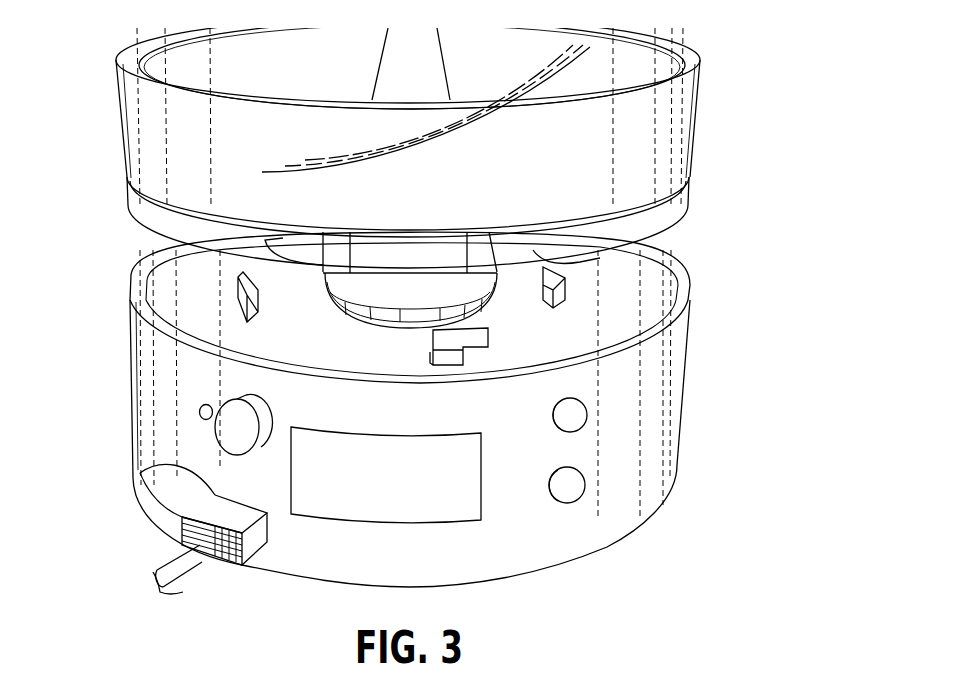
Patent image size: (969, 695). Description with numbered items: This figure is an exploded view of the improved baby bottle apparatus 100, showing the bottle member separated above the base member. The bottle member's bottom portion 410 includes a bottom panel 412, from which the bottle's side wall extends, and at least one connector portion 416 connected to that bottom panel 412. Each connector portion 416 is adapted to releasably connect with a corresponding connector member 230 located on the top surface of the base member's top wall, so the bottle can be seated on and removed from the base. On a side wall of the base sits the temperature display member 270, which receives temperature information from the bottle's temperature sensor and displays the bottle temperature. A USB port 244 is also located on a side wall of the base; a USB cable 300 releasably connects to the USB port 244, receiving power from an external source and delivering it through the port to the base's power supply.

The improved baby bottle apparatus 100 is at (444, 308).
The bottom portion 410 is at (680, 165).
The bottom panel 412 is at (668, 218).
The connector portion 416 is at (285, 238).
The connector member 230 is at (240, 297).
The USB port 244 is at (140, 473).
The temperature display member 270 is at (463, 508).
The USB cable 300 is at (153, 572).